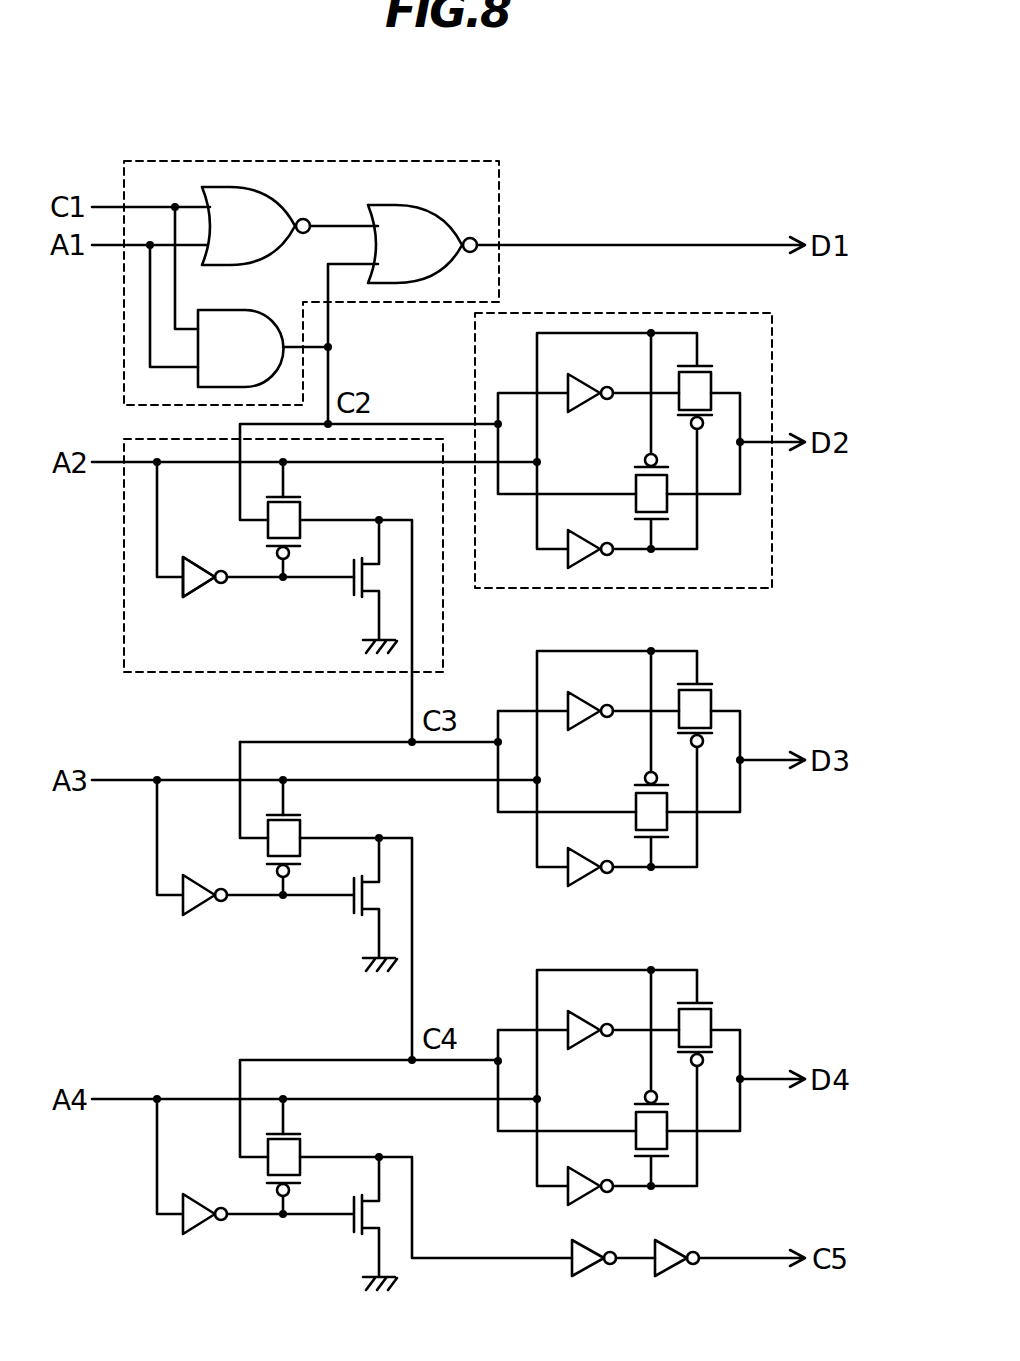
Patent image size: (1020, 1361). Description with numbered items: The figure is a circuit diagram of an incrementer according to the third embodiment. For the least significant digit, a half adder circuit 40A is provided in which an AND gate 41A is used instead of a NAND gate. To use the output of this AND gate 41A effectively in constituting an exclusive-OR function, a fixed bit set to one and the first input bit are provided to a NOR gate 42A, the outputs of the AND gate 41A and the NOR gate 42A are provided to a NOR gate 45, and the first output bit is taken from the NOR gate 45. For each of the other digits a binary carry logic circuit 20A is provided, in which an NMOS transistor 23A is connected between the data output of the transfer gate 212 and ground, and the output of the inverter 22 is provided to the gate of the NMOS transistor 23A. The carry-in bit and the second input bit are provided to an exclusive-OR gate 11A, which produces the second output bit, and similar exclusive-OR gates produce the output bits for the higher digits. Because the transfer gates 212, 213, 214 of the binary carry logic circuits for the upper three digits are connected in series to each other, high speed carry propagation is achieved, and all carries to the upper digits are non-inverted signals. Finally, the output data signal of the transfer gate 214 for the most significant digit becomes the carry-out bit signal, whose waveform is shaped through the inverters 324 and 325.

The half adder circuit 40A is at (316, 161).
The NOR gate 42A is at (262, 191).
The NOR gate 45 is at (412, 206).
The AND gate 41A is at (232, 310).
The exclusive-OR gate 11A is at (622, 313).
The binary carry logic circuit 20A is at (124, 554).
The transfer gate 212 is at (300, 512).
The inverter 22 is at (198, 591).
The NMOS transistor 23A is at (357, 600).
The transfer gate 213 is at (323, 848).
The transfer gate 214 is at (323, 1167).
The inverter 324 is at (586, 1270).
The inverter 325 is at (669, 1270).